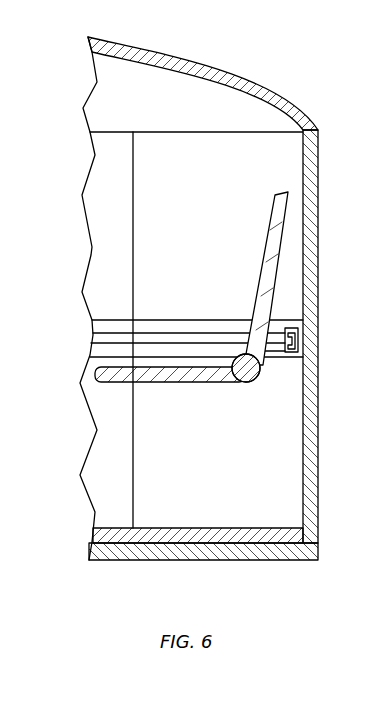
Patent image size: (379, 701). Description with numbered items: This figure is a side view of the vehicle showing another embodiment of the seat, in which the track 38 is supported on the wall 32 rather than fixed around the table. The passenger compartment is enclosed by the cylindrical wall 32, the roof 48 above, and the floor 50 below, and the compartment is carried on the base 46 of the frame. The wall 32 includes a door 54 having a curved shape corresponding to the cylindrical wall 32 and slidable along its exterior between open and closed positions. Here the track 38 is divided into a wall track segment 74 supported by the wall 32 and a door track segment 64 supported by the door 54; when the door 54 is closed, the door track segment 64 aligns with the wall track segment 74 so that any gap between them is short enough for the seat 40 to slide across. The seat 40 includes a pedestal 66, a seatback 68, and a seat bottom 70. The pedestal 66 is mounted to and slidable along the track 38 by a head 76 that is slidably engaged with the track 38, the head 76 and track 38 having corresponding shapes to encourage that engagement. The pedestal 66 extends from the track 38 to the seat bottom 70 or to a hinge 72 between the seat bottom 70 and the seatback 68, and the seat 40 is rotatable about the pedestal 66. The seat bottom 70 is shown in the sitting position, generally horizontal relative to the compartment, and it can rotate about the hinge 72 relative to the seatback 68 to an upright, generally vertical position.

The wall 32 is at (318, 197).
The track 38 is at (122, 333).
The seat 40 is at (198, 314).
The base 46 is at (187, 560).
The roof 48 is at (279, 93).
The floor 50 is at (192, 528).
The door 54 is at (133, 182).
The door track segment 64 is at (112, 332).
The pedestal 66 is at (268, 350).
The seatback 68 is at (268, 215).
The seat bottom 70 is at (190, 382).
The hinge 72 is at (247, 387).
The wall track segment 74 is at (190, 333).
The head 76 is at (302, 342).